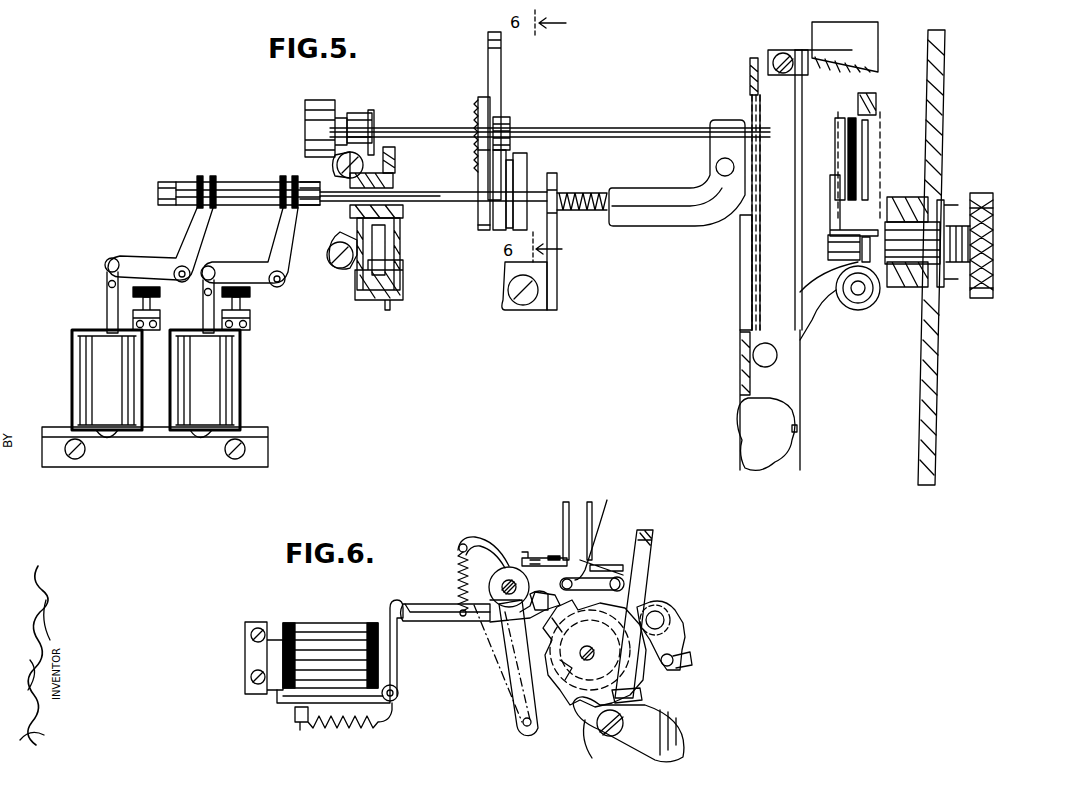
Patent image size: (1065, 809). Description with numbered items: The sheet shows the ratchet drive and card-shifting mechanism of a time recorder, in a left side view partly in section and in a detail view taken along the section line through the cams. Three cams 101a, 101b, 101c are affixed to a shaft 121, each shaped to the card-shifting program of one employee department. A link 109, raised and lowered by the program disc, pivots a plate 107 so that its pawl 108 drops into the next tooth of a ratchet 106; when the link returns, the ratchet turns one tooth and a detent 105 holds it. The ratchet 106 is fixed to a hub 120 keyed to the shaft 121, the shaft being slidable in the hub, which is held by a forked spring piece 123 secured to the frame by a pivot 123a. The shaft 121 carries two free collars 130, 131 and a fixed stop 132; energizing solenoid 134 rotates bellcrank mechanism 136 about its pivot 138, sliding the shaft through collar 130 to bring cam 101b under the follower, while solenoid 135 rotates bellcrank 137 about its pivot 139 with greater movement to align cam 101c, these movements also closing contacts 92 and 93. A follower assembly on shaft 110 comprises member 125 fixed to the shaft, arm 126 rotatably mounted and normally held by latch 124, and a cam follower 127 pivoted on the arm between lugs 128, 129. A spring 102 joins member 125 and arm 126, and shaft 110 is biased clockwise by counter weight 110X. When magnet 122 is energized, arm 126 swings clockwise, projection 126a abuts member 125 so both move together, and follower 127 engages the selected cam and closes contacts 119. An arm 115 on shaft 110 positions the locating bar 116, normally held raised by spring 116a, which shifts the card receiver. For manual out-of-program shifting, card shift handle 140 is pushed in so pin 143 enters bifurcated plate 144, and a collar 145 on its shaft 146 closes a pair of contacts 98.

In FIG. 5, the contacts 92 is at (252, 306).
In FIG. 5, the contacts 93 is at (157, 306).
In FIG. 5, the pair of contacts 98 is at (860, 183).
In FIG. 5, the cam 101a is at (493, 220).
In FIG. 6, the cam 101a is at (512, 725).
In FIG. 5, the cam 101b is at (513, 232).
In FIG. 6, the cam 101b is at (623, 724).
In FIG. 5, the cam 101c is at (508, 232).
In FIG. 6, the cam 101c is at (645, 695).
In FIG. 6, the spring 102 is at (455, 576).
In FIG. 6, the detent 105 is at (600, 745).
In FIG. 5, the ratchet 106 is at (398, 152).
In FIG. 6, the ratchet 106 is at (565, 700).
In FIG. 6, the plate 107 is at (670, 615).
In FIG. 6, the pawl 108 is at (680, 650).
In FIG. 6, the link 109 is at (653, 545).
In FIG. 5, the shaft 110 is at (568, 128).
In FIG. 6, the shaft 110 is at (510, 580).
In FIG. 5, the counter weight 110X is at (330, 100).
In FIG. 5, the arm 115 is at (745, 218).
In FIG. 6, the arm 115 is at (500, 690).
In FIG. 5, the locating bar 116 is at (752, 280).
In FIG. 5, the spring 116a is at (842, 305).
In FIG. 5, the contacts 119 is at (500, 48).
In FIG. 6, the contacts 119 is at (572, 502).
In FIG. 5, the hub 120 is at (398, 180).
In FIG. 5, the shaft 121 is at (448, 192).
In FIG. 6, the shaft 121 is at (582, 655).
In FIG. 6, the magnet 122 is at (315, 623).
In FIG. 5, the forked spring piece 123 is at (400, 220).
In FIG. 5, the pivot 123a is at (403, 285).
In FIG. 6, the latch 124 is at (397, 655).
In FIG. 5, the member 125 is at (478, 99).
In FIG. 6, the member 125 is at (490, 540).
In FIG. 5, the arm 126 is at (478, 165).
In FIG. 6, the arm 126 is at (465, 622).
In FIG. 6, the projection 126a is at (552, 612).
In FIG. 6, the cam follower 127 is at (625, 585).
In FIG. 6, the lug 128 is at (607, 500).
In FIG. 6, the lug 129 is at (592, 556).
In FIG. 5, the collar 130 is at (273, 183).
In FIG. 5, the collar 131 is at (233, 182).
In FIG. 5, the stop 132 is at (165, 183).
In FIG. 5, the solenoid 134 is at (240, 385).
In FIG. 5, the solenoid 135 is at (72, 379).
In FIG. 5, the bellcrank mechanism 136 is at (288, 250).
In FIG. 5, the bellcrank 137 is at (195, 232).
In FIG. 5, the pivot 138 is at (282, 287).
In FIG. 5, the pivot 139 is at (190, 270).
In FIG. 5, the card shift handle 140 is at (993, 200).
In FIG. 5, the pin 143 is at (835, 200).
In FIG. 5, the bifurcated plate 144 is at (835, 190).
In FIG. 5, the collar 145 is at (830, 255).
In FIG. 5, the shaft 146 is at (915, 250).